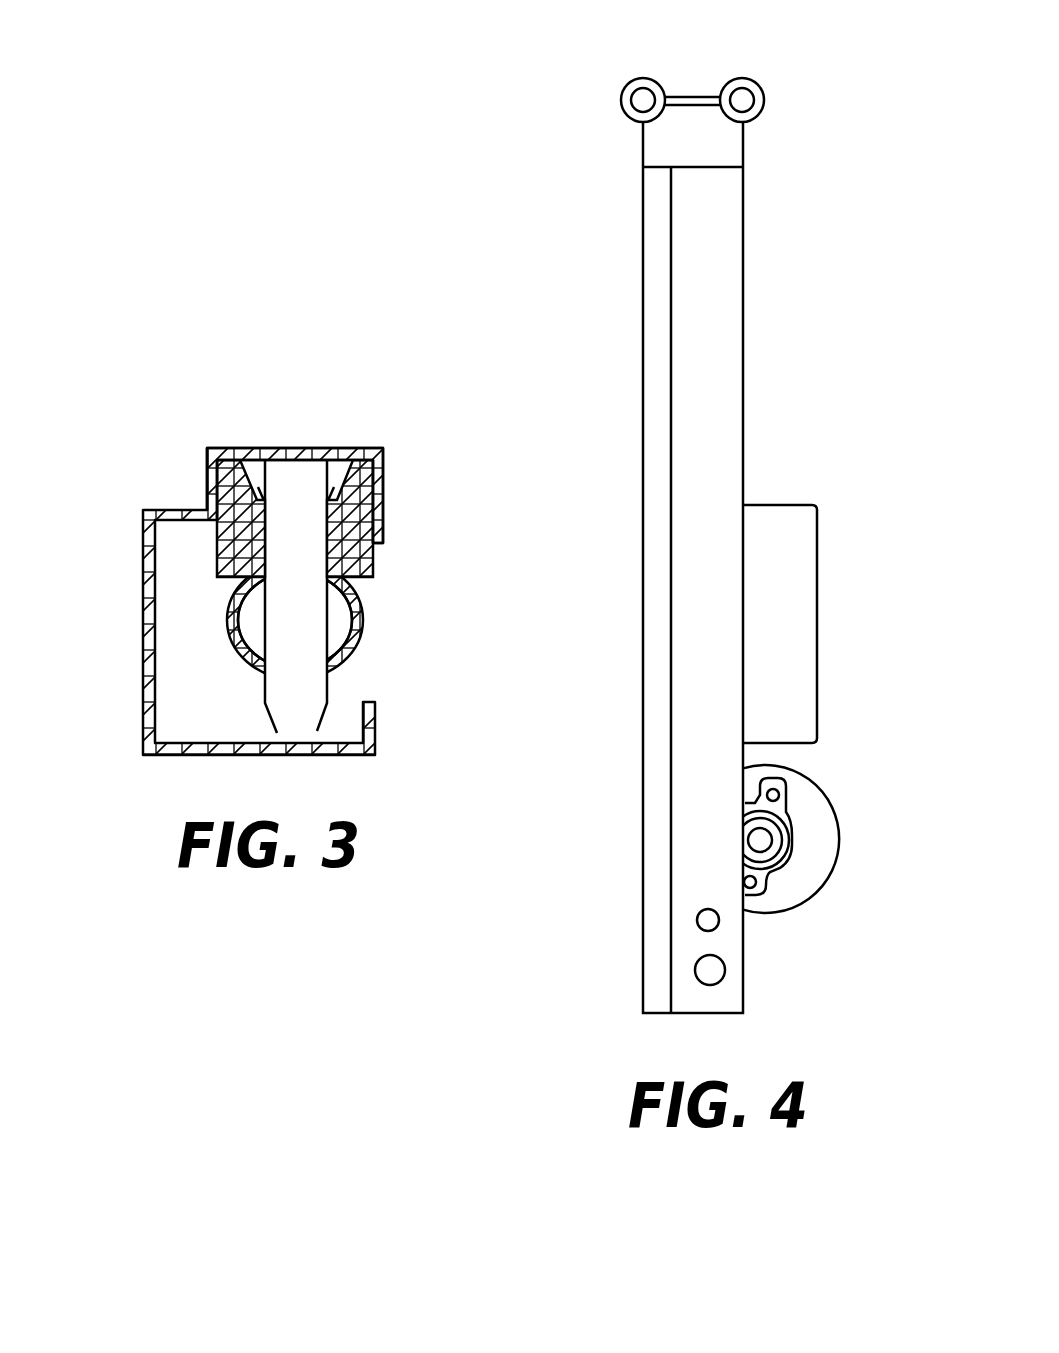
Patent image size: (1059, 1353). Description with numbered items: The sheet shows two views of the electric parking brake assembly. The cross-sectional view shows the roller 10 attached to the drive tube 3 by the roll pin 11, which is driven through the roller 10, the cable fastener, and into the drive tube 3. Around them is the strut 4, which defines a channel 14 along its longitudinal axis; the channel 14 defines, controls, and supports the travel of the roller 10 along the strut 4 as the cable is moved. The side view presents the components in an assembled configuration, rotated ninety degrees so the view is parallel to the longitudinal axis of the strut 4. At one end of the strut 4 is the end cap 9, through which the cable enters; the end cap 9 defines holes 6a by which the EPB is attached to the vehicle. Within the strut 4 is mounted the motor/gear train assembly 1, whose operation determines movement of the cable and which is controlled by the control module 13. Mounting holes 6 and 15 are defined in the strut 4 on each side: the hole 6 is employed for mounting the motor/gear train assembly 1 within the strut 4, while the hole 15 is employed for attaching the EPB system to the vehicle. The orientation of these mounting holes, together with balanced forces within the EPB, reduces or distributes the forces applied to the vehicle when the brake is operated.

In FIG. 4, the motor/gear train assembly 1 is at (845, 852).
In FIG. 3, the drive tube 3 is at (349, 595).
In FIG. 3, the strut 4 is at (136, 620).
In FIG. 4, the strut 4 is at (749, 300).
In FIG. 4, the mounting hole 6 is at (693, 923).
In FIG. 4, the holes 6a is at (715, 113).
In FIG. 4, the end cap 9 is at (749, 143).
In FIG. 3, the roller 10 is at (219, 476).
In FIG. 3, the roll pin 11 is at (336, 610).
In FIG. 4, the control module 13 is at (820, 624).
In FIG. 3, the channel 14 is at (297, 430).
In FIG. 4, the mounting hole 15 is at (729, 975).